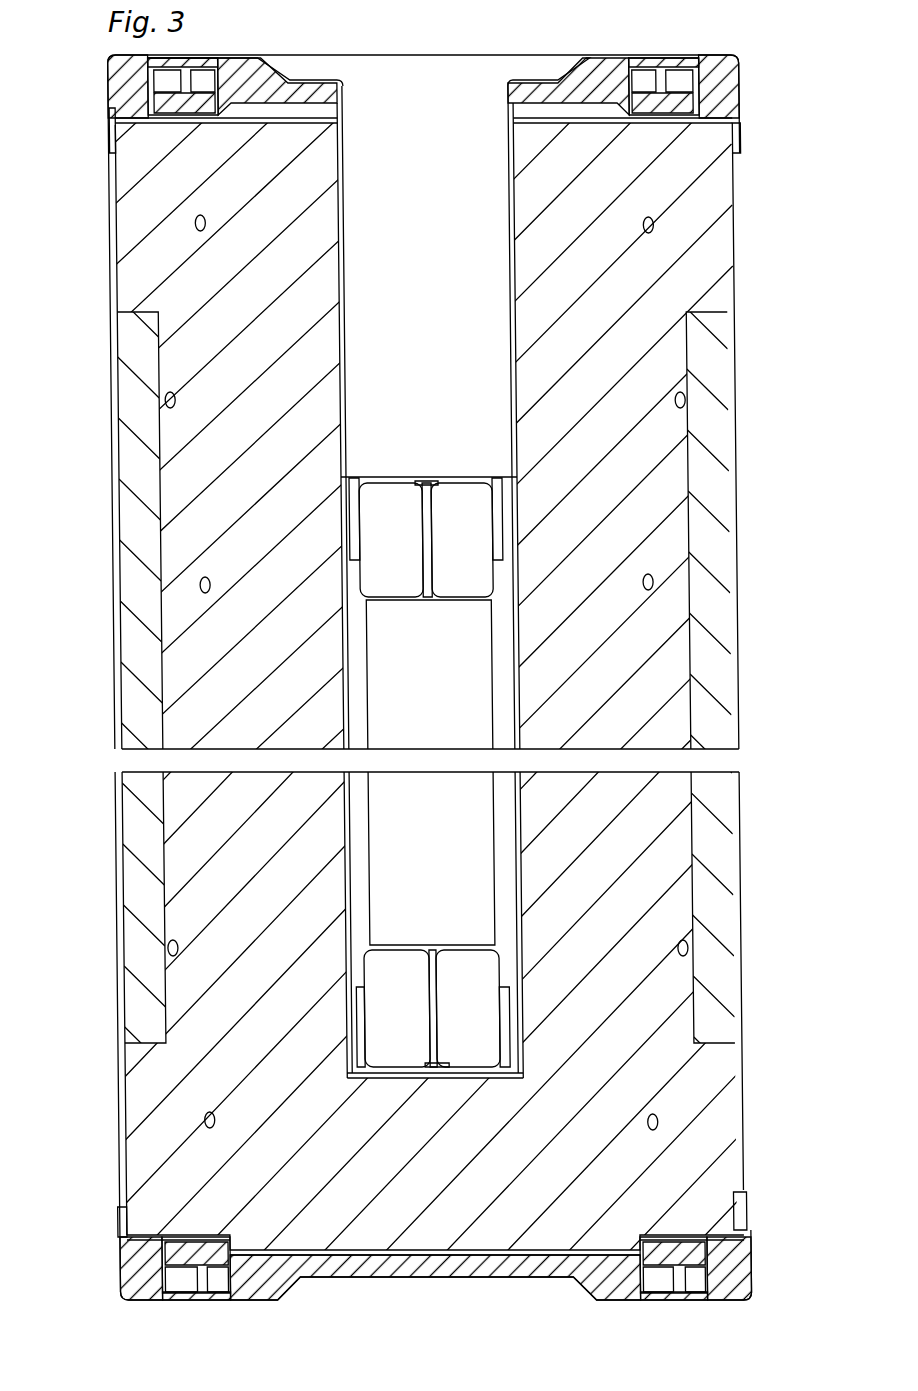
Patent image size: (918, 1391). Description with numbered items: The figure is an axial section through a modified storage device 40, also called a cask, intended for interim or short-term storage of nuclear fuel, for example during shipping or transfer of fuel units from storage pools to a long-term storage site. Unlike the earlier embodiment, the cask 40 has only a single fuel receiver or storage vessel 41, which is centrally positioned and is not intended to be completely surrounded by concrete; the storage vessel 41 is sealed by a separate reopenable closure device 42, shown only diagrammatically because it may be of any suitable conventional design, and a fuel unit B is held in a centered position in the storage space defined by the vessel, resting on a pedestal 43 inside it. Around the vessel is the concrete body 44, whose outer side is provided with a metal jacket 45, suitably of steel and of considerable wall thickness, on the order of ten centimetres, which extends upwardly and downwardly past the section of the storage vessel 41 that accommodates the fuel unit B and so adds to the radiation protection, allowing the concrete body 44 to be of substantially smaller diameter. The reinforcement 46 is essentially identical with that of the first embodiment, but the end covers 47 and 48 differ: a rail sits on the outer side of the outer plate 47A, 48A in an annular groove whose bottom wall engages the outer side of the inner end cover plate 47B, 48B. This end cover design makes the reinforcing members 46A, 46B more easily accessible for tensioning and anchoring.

The storage device 40 is at (104, 304).
The storage vessel 41 is at (512, 716).
The cavity 42 is at (453, 150).
The pedestal 43 is at (397, 968).
The concrete body 44 is at (178, 650).
The metal jacket 45 is at (135, 710).
The reinforcement 46 is at (117, 516).
The reinforcing member 46A is at (160, 400).
The reinforcing member 46B is at (190, 586).
The end cover 47 is at (110, 1285).
The outer plate 47A is at (580, 1300).
The inner end cover plate 47B is at (736, 1192).
The end cover 48 is at (100, 95).
The outer plate 48A is at (585, 62).
The inner end cover plate 48B is at (738, 132).
The fuel unit B is at (440, 705).